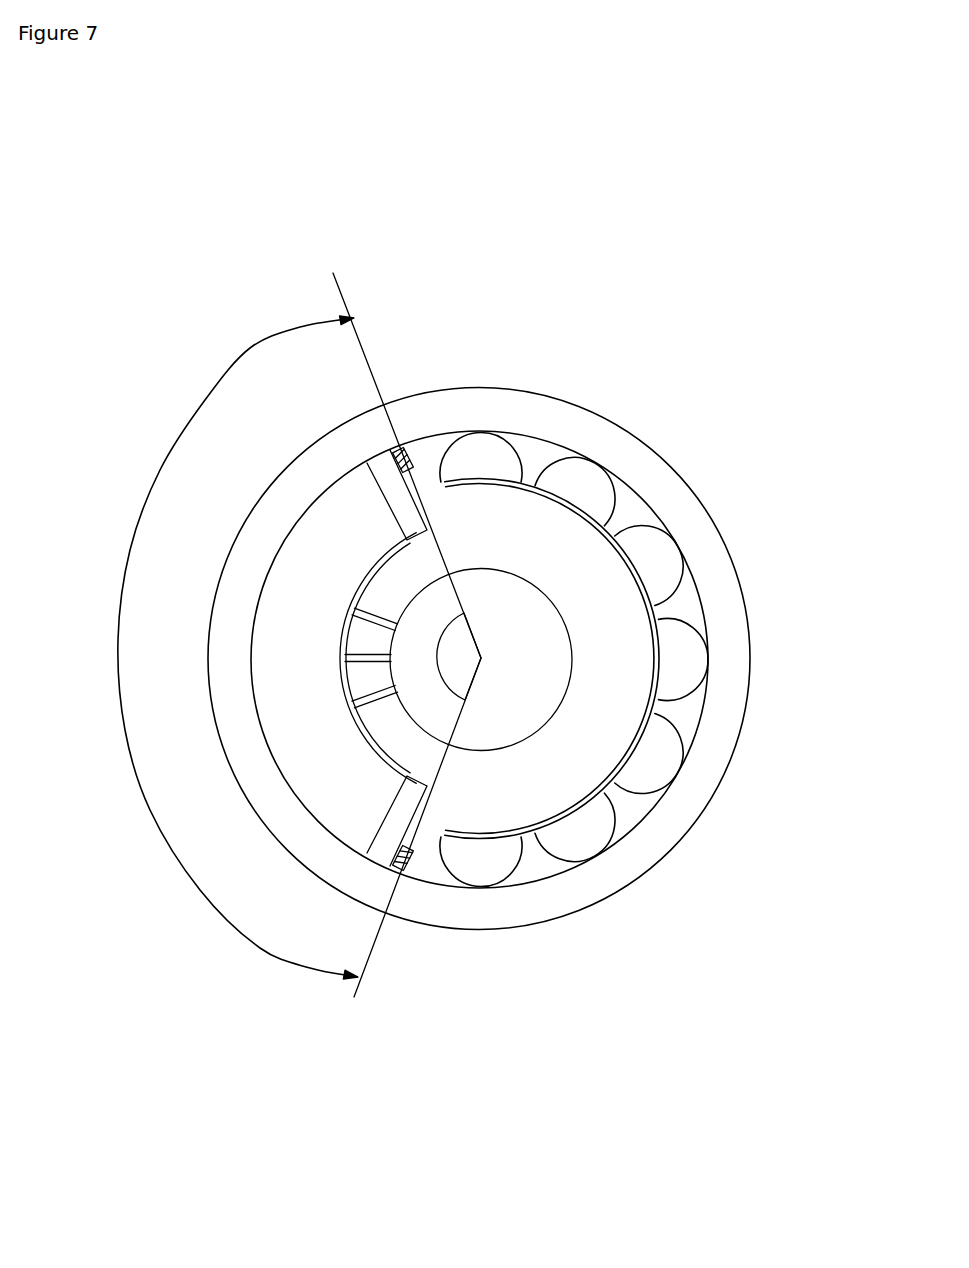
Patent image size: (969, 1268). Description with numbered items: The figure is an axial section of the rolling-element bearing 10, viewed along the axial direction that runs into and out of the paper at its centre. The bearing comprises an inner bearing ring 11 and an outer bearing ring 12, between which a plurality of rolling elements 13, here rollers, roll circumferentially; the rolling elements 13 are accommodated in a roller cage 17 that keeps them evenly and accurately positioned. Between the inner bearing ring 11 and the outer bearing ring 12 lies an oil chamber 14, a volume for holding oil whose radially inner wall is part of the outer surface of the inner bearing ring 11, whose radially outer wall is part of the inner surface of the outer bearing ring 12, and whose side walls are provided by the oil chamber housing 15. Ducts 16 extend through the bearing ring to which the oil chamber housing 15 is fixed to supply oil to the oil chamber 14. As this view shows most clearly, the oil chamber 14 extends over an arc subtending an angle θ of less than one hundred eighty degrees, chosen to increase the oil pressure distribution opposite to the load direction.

The rolling-element bearing 10 is at (638, 340).
The inner bearing ring 11 is at (520, 763).
The outer bearing ring 12 is at (654, 847).
The rolling elements 13 is at (685, 668).
The oil chamber 14 is at (333, 780).
The oil chamber housing 15 is at (400, 877).
The duct 16 is at (373, 618).
The roller cage 17 is at (665, 707).